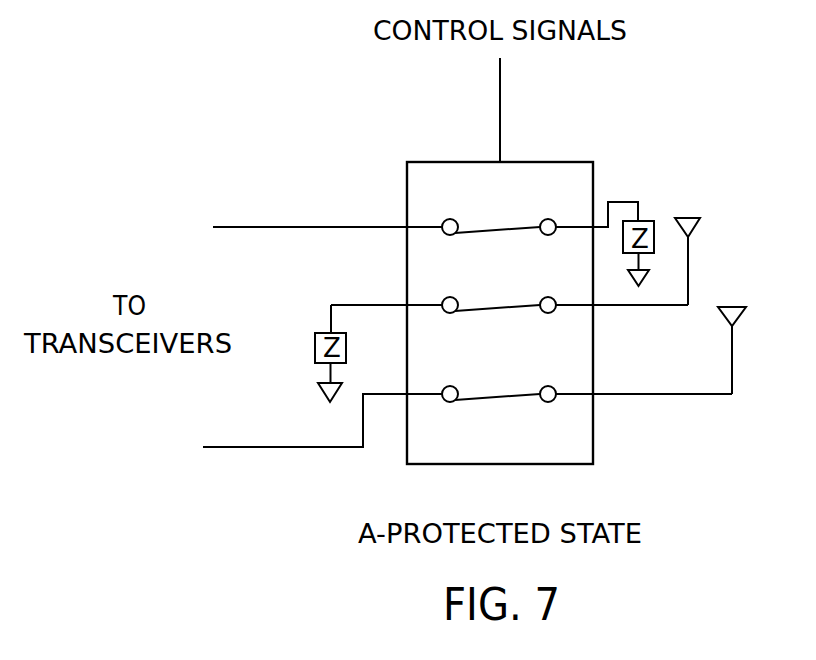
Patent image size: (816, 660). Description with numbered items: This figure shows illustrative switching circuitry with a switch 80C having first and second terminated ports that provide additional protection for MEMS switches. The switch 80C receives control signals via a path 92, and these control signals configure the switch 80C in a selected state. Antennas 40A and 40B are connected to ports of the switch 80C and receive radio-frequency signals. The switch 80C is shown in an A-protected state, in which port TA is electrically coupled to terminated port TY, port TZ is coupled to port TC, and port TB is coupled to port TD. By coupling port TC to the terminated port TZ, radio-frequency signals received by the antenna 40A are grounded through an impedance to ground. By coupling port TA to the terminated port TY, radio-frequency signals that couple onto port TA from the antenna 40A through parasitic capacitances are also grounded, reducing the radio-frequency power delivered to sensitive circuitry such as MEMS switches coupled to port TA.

The path 92 is at (502, 83).
The switch 80C is at (552, 160).
The antenna 40A is at (688, 216).
The antenna 40B is at (731, 306).